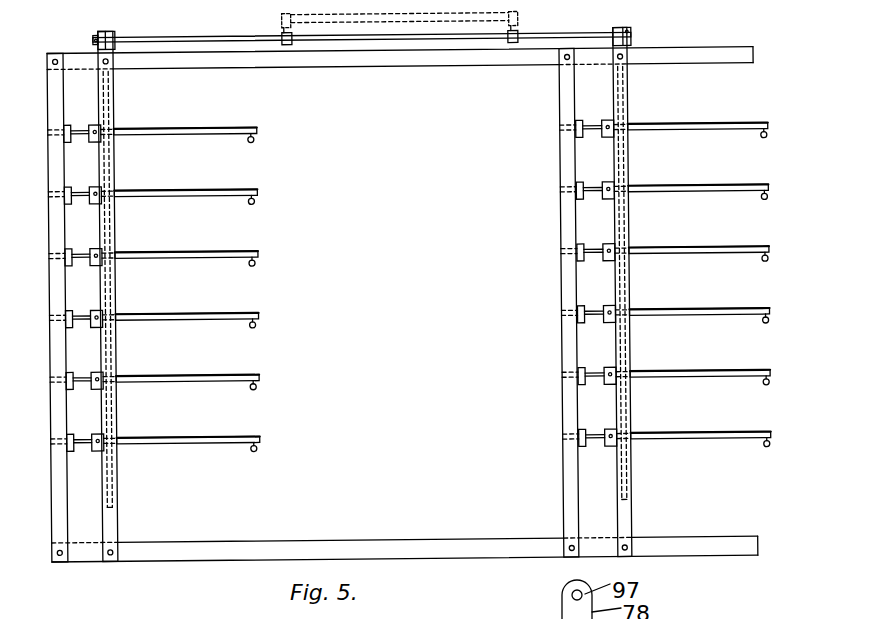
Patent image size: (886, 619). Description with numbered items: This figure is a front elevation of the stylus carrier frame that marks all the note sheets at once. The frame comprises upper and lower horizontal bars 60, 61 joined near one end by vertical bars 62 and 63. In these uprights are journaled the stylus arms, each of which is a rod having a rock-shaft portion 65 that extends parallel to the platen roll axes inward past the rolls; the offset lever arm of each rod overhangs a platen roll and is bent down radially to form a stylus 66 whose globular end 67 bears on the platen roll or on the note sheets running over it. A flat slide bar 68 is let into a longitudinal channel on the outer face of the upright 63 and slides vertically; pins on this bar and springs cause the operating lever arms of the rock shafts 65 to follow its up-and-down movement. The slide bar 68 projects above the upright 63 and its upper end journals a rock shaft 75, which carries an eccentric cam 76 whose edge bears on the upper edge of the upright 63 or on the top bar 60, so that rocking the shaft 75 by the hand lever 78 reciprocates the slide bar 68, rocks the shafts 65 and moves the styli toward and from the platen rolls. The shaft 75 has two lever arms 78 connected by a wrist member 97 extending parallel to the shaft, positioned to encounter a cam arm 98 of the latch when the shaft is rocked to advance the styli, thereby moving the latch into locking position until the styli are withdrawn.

The upper horizontal bar 60 is at (470, 61).
The lower horizontal bar 61 is at (418, 548).
The vertical bar 62 is at (78, 510).
The upright bar 63 is at (112, 529).
The rock-shaft portion 65 is at (187, 128).
The stylus 66 is at (254, 138).
The globular end 67 is at (255, 148).
The slide bar 68 is at (112, 33).
The rock shaft 75 is at (230, 44).
The eccentric cam 76 is at (95, 47).
The hand lever 78 is at (287, 49).
The wrist member 97 is at (340, 33).
The cam arm 98 is at (504, 609).